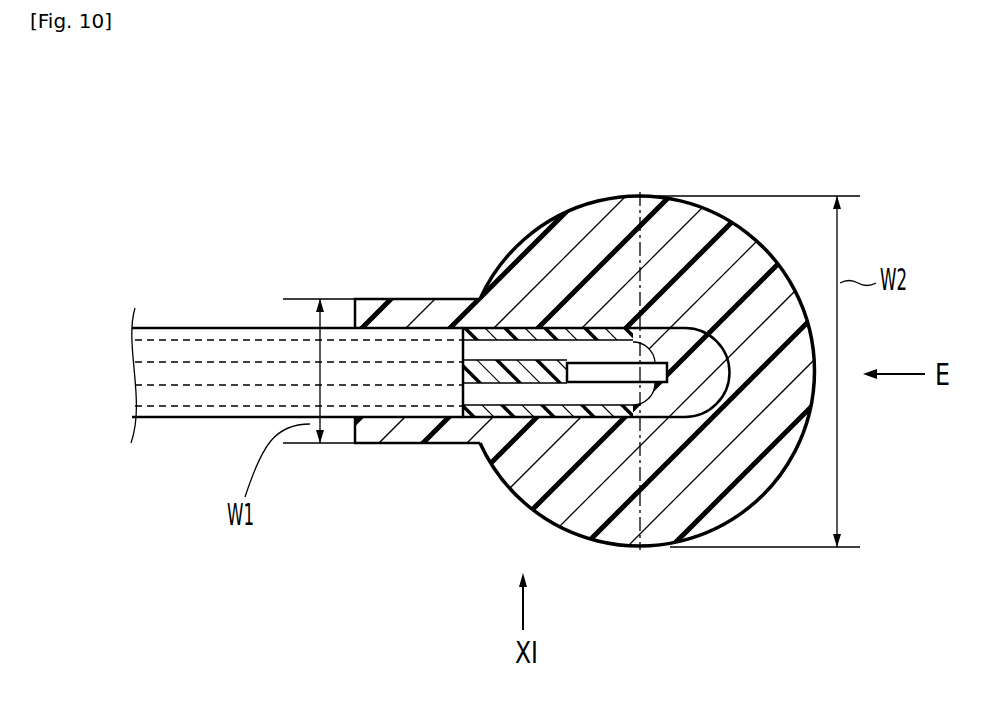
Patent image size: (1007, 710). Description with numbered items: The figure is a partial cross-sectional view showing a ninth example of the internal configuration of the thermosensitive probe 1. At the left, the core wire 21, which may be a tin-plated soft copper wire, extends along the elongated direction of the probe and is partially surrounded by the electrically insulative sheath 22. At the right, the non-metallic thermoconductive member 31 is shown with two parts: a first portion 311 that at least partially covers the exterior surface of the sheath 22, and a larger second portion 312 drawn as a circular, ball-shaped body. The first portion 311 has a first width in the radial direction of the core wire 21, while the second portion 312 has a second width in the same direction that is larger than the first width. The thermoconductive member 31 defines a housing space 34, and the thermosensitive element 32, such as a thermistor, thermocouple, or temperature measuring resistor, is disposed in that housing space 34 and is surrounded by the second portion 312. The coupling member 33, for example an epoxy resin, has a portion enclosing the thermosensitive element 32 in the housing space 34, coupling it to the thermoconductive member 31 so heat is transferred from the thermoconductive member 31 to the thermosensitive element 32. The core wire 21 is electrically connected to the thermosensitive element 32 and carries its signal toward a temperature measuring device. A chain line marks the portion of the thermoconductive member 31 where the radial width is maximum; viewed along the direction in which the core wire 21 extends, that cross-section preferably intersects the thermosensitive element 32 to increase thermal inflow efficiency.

The thermosensitive probe 1 is at (746, 160).
The core wire 21 is at (483, 352).
The sheath 22 is at (384, 395).
The thermoconductive member 31 is at (564, 115).
The first portion 311 is at (443, 312).
The second portion 312 is at (598, 230).
The thermosensitive element 32 is at (598, 373).
The coupling member 33 is at (698, 400).
The housing space 34 is at (667, 345).